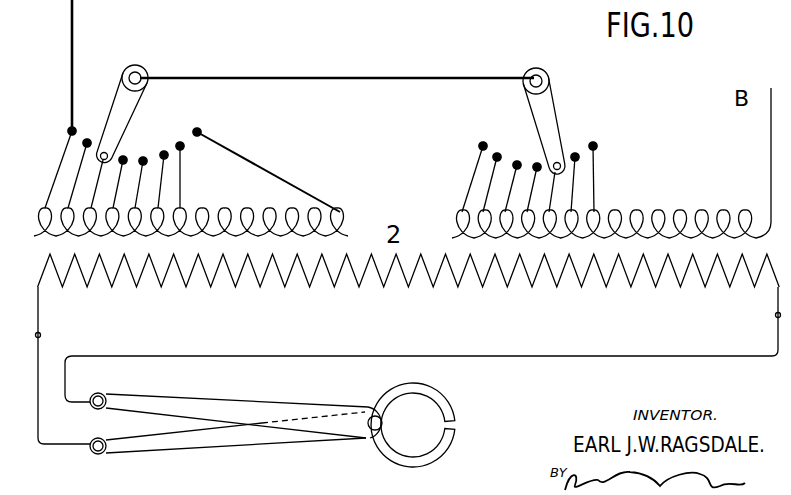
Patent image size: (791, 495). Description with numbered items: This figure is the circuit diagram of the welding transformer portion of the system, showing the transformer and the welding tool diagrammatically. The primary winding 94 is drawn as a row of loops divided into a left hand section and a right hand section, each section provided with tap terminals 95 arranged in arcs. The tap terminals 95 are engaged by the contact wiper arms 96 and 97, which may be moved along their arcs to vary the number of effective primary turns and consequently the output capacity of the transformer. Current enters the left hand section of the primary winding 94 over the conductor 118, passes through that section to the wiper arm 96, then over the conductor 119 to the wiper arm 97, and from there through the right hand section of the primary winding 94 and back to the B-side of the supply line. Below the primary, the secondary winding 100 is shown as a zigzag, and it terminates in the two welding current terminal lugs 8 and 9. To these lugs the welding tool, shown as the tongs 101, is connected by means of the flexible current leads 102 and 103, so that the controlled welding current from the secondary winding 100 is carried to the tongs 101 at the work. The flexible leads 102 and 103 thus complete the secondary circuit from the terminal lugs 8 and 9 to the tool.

The conductor 118 is at (71, 70).
The conductor 119 is at (412, 78).
The contact wiper arm 96 is at (118, 92).
The contact wiper arm 97 is at (548, 120).
The tap terminals 95 is at (167, 150).
The primary winding 94 is at (457, 220).
The secondary winding 100 is at (328, 284).
The flexible current lead 103 is at (148, 356).
The flexible current lead 102 is at (53, 445).
The welding current terminal lug 8 is at (41, 333).
The welding current terminal lug 9 is at (775, 315).
The tongs 101 is at (303, 440).